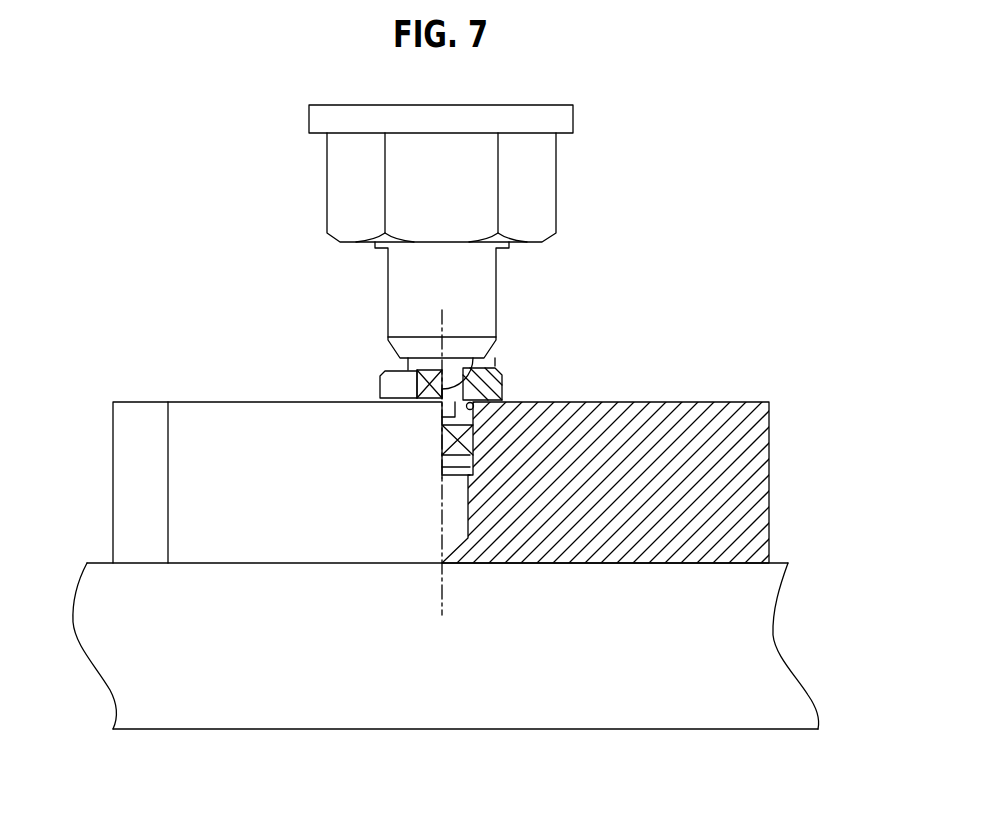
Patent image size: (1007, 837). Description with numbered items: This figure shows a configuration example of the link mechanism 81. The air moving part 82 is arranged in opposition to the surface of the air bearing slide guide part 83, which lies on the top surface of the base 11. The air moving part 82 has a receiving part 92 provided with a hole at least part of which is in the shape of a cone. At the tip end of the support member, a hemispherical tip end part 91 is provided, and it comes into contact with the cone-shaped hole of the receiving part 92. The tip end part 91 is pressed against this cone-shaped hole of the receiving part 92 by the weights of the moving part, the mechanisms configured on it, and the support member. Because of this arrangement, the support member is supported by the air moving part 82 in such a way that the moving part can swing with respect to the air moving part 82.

The link mechanism 81 is at (350, 348).
The tip end part 91 is at (460, 367).
The receiving part 92 is at (498, 384).
The air moving part 82 is at (760, 480).
The air bearing slide guide part 83 is at (98, 573).
The base 11 is at (627, 707).